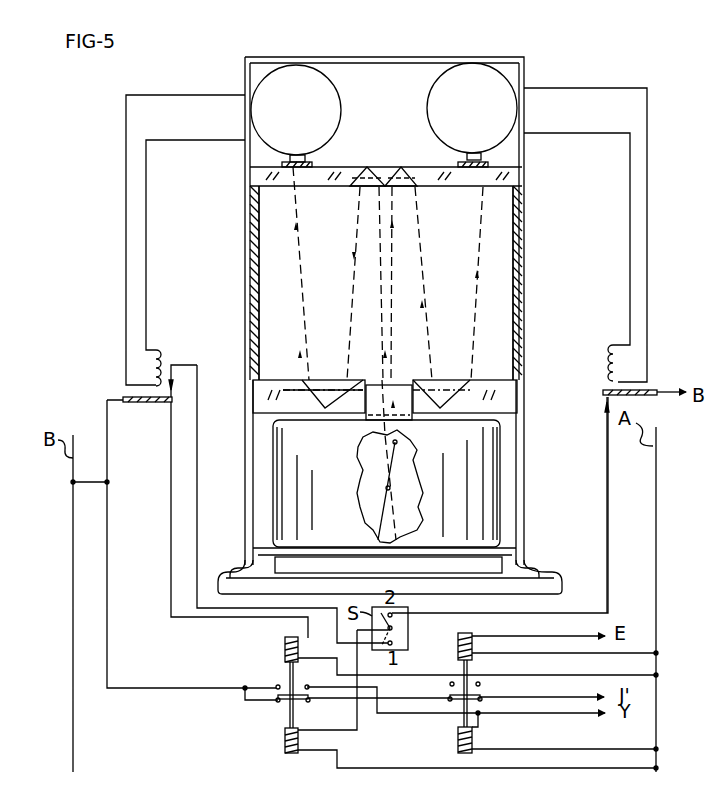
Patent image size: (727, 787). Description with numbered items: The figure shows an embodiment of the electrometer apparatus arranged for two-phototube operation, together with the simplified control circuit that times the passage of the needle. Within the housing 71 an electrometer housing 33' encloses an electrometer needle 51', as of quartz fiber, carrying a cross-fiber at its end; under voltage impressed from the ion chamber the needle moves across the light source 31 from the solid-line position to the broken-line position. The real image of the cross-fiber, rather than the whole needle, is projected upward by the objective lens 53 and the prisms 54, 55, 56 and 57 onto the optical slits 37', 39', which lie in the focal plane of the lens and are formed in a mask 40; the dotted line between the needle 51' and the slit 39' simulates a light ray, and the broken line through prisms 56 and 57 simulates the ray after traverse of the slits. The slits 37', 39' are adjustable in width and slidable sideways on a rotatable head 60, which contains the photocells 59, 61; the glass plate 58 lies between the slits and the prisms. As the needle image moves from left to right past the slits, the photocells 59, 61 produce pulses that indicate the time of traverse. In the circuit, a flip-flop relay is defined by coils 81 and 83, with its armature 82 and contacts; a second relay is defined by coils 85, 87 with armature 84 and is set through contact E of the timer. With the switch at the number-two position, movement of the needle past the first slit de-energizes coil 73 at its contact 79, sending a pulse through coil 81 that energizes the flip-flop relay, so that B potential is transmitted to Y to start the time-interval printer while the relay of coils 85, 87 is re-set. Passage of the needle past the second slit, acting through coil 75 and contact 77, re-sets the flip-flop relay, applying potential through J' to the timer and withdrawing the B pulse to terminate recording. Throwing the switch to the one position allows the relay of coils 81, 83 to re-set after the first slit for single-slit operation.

The rotatable head 60 is at (531, 71).
The photocell 61 is at (301, 73).
The photocell 59 is at (467, 72).
The optical slit 39' is at (324, 150).
The optical slit 37' is at (443, 150).
The mask 40 is at (497, 163).
The glass plate 58 is at (514, 176).
The prism 55 is at (358, 187).
The prism 56 is at (413, 187).
The housing 71 is at (527, 284).
The prism 54 is at (308, 377).
The prism 57 is at (477, 378).
The objective lens 53 is at (372, 410).
The electrometer needle 51' is at (373, 486).
The electrometer housing 33' is at (386, 483).
The light source 31 is at (419, 568).
The coil 73 is at (162, 348).
The relay coil 75 is at (612, 344).
The relay contact 77 is at (610, 390).
The relay contact 79 is at (137, 403).
The coil 81 is at (285, 647).
The relay armature 82 is at (298, 700).
The coil 83 is at (283, 742).
The relay armature 84 is at (481, 686).
The coil 85 is at (458, 648).
The coil 87 is at (458, 742).